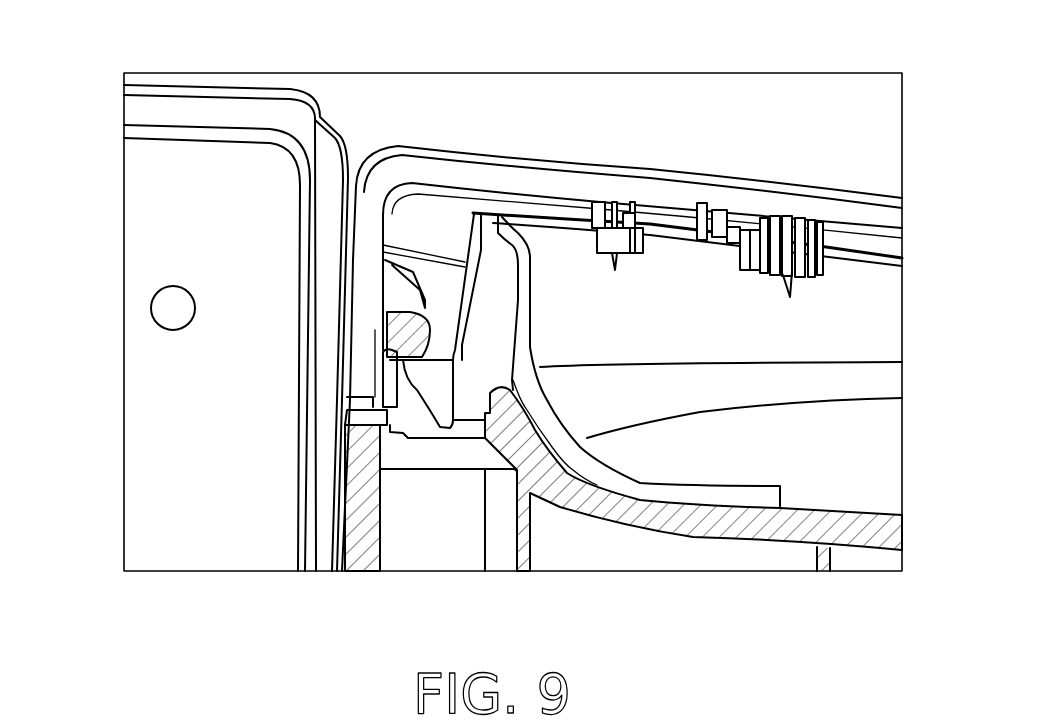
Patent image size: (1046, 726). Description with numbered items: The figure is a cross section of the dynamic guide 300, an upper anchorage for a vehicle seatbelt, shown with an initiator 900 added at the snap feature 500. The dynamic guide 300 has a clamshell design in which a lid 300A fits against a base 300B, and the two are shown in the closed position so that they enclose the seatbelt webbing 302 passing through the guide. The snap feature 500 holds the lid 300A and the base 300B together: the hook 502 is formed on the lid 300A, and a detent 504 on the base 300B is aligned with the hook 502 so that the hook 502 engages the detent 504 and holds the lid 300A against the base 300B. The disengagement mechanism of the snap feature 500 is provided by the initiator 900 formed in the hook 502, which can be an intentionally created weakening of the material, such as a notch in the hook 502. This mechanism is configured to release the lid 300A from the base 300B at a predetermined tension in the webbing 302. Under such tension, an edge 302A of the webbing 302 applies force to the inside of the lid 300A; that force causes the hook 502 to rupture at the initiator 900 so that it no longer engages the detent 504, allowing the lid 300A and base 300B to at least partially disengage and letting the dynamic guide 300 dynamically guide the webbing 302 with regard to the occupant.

The dynamic guide 300 is at (363, 103).
The lid 300A is at (481, 250).
The base 300B is at (482, 470).
The webbing 302 is at (902, 398).
The edge of the webbing 302A is at (473, 213).
The snap feature 500 is at (600, 312).
The hook 502 is at (462, 281).
The detent 504 is at (397, 340).
The initiator 900 is at (437, 294).